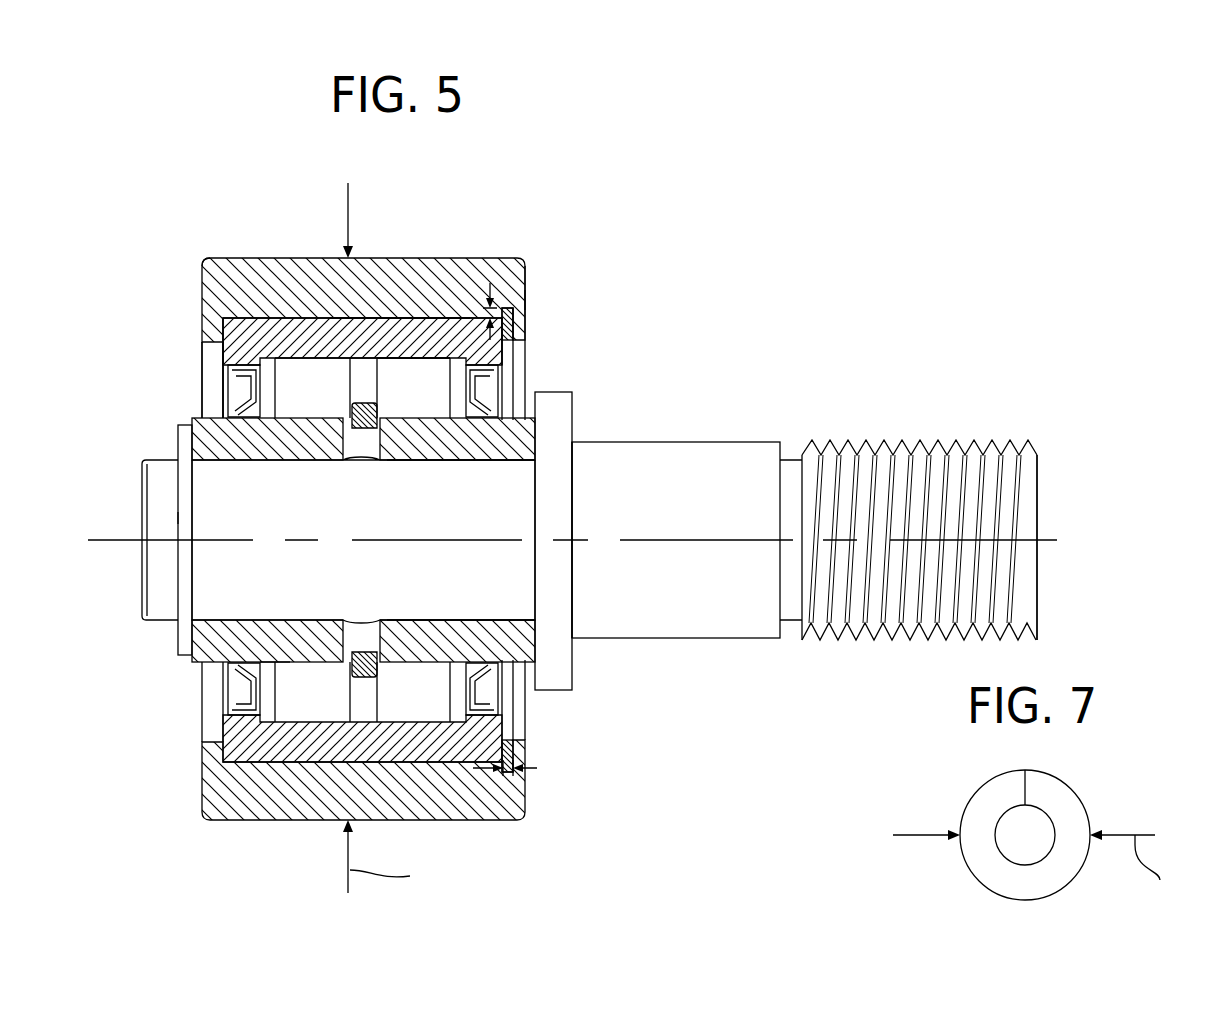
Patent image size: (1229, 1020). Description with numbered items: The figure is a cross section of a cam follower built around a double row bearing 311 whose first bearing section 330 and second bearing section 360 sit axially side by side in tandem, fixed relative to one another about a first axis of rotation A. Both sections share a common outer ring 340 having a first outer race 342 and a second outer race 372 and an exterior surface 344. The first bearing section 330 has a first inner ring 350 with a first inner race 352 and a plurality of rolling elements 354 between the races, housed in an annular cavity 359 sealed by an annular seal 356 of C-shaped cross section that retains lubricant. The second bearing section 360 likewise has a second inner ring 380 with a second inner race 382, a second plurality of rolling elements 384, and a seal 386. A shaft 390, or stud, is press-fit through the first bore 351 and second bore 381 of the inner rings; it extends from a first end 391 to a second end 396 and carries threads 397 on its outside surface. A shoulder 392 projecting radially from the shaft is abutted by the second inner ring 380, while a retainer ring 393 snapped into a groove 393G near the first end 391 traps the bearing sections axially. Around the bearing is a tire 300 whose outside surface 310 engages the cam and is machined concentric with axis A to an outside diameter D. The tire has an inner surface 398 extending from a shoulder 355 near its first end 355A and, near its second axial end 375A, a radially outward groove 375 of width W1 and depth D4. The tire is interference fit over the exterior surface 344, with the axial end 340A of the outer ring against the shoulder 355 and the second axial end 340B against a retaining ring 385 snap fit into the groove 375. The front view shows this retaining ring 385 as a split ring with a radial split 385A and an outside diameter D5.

In FIG. 5, the tire 300 is at (202, 275).
In FIG. 5, the outside surface 310 is at (213, 260).
In FIG. 5, the double row bearing 311 is at (174, 325).
In FIG. 5, the first bearing section 330 is at (353, 490).
In FIG. 5, the common outer ring 340 is at (260, 328).
In FIG. 5, the axial end of the common outer ring 340A is at (205, 338).
In FIG. 5, the second axial end of the common outer ring 340B is at (502, 357).
In FIG. 5, the first outer race 342 is at (325, 355).
In FIG. 5, the exterior surface 344 is at (428, 318).
In FIG. 5, the first inner ring 350 is at (300, 463).
In FIG. 5, the first bore 351 is at (190, 628).
In FIG. 5, the first inner race 352 is at (313, 720).
In FIG. 5, the rolling elements 354 is at (300, 703).
In FIG. 5, the shoulder 355 is at (243, 320).
In FIG. 5, the first end of the tire 355A is at (203, 295).
In FIG. 5, the annular seal 356 is at (228, 683).
In FIG. 5, the annular cavity 359 is at (270, 662).
In FIG. 5, the second bearing section 360 is at (525, 490).
In FIG. 5, the second outer race 372 is at (445, 357).
In FIG. 5, the groove 375 is at (523, 272).
In FIG. 5, the second axial end of the tire 375A is at (527, 300).
In FIG. 5, the second inner ring 380 is at (478, 463).
In FIG. 5, the second bore 381 is at (537, 620).
In FIG. 5, the second inner race 382 is at (423, 660).
In FIG. 5, the second plurality of rolling elements 384 is at (425, 700).
In FIG. 5, the retaining ring 385 is at (515, 327).
In FIG. 7, the retaining ring 385 is at (1087, 776).
In FIG. 7, the radial split 385A is at (1022, 793).
In FIG. 5, the seal 386 is at (497, 690).
In FIG. 5, the shaft 390 is at (720, 627).
In FIG. 5, the first end 391 is at (142, 490).
In FIG. 5, the shoulder 392 is at (557, 490).
In FIG. 5, the retainer ring 393 is at (178, 443).
In FIG. 5, the groove 393G is at (166, 518).
In FIG. 5, the second end 396 is at (1040, 500).
In FIG. 5, the threads 397 is at (912, 440).
In FIG. 5, the inner surface 398 is at (388, 322).
In FIG. 5, the first axis of rotation A is at (103, 542).
In FIG. 5, the outside diameter D is at (387, 538).
In FIG. 5, the depth D4 is at (493, 283).
In FIG. 7, the outside diameter D5 is at (1037, 870).
In FIG. 5, the width W1 is at (537, 770).